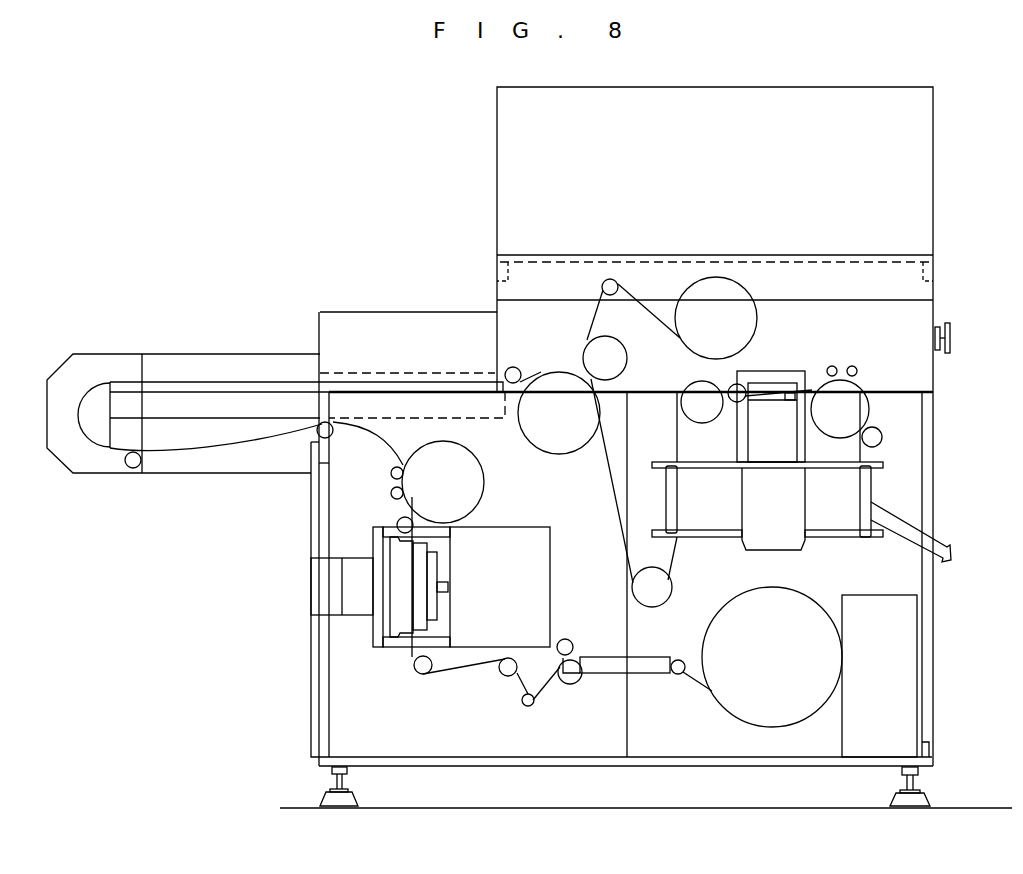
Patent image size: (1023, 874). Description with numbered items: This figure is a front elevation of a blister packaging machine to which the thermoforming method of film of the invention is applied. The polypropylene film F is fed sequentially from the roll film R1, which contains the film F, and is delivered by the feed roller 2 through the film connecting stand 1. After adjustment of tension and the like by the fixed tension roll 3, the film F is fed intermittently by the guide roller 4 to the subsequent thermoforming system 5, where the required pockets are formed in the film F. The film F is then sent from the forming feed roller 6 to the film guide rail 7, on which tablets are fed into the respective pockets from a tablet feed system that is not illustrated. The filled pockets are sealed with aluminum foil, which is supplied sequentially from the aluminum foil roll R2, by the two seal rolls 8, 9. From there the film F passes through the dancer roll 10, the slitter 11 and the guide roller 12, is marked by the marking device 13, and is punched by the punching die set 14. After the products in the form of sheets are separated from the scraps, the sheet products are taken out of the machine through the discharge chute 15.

The film connecting stand 1 is at (642, 667).
The feed roller 2 is at (572, 684).
The fixed tension roll 3 is at (528, 707).
The guide roller 4 is at (423, 674).
The thermoforming system 5 is at (397, 615).
The forming feed roller 6 is at (417, 498).
The film guide rail 7 is at (238, 390).
The seal roll 8 is at (550, 377).
The seal roll 9 is at (594, 340).
The dancer roll 10 is at (660, 590).
The slitter 11 is at (677, 508).
The guide roller 12 is at (717, 383).
The marking device 13 is at (792, 377).
The punching die set 14 is at (866, 483).
The discharge chute 15 is at (952, 543).
The polypropylene film F is at (447, 674).
The roll film R1 is at (798, 717).
The aluminum foil roll R2 is at (700, 290).